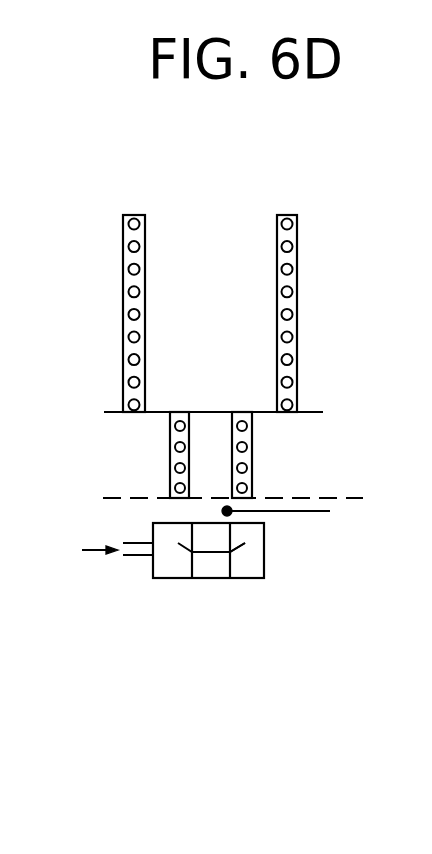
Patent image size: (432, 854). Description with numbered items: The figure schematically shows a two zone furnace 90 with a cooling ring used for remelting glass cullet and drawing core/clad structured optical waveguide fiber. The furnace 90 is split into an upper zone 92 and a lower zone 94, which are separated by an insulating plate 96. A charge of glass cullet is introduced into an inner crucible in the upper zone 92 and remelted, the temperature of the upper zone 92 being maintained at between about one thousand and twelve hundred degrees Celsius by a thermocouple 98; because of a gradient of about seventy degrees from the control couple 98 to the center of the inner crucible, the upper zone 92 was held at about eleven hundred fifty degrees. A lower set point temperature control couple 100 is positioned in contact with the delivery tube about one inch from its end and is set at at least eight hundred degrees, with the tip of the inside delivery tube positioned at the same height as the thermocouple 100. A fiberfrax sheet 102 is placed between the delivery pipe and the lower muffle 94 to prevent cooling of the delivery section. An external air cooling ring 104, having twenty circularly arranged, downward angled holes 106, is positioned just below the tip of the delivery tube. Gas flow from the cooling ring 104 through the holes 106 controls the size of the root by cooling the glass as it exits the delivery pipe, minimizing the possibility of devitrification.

The furnace 90 is at (319, 230).
The upper zone 92 is at (297, 368).
The lower zone 94 is at (252, 460).
The insulating plate 96 is at (323, 412).
The thermocouple 98 is at (155, 306).
The lower set point temperature control couple 100 is at (197, 457).
The fiberfrax sheet 102 is at (260, 501).
The external air cooling ring 104 is at (264, 553).
The downward angled holes 106 is at (243, 562).